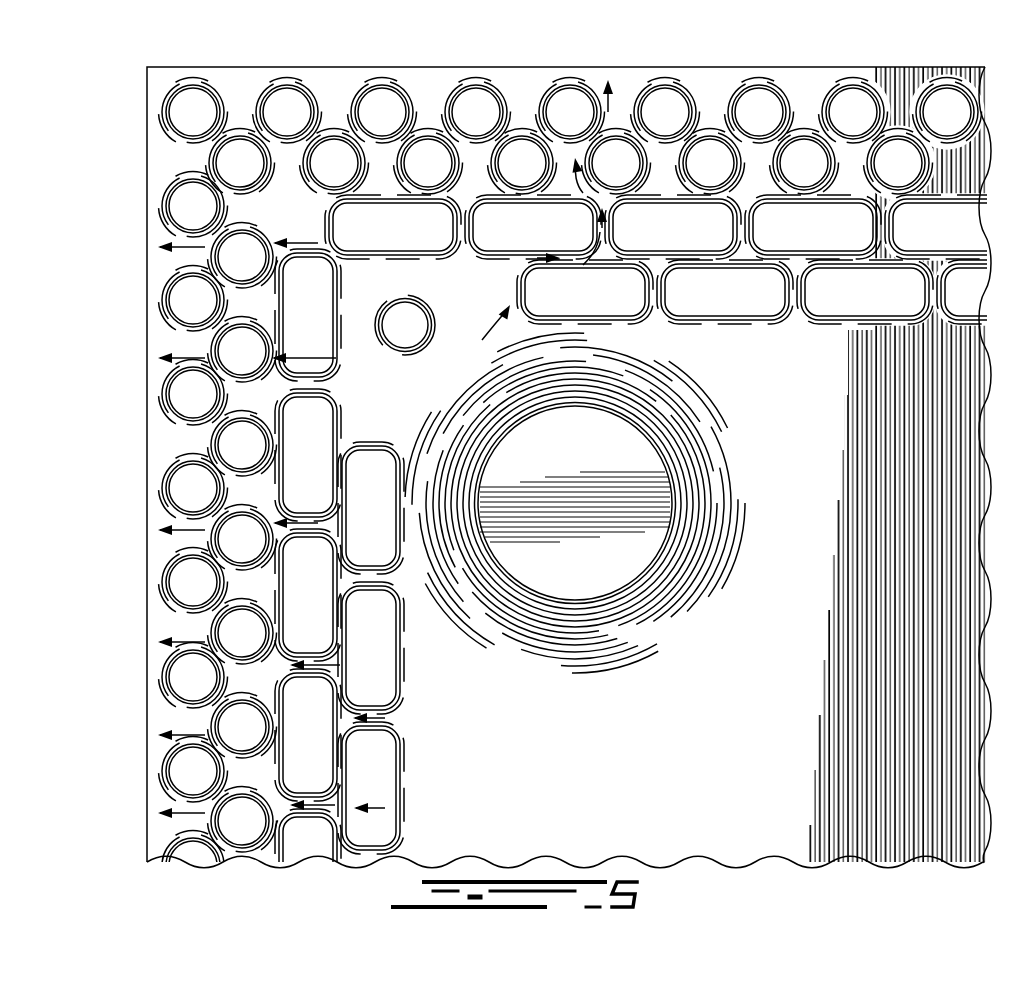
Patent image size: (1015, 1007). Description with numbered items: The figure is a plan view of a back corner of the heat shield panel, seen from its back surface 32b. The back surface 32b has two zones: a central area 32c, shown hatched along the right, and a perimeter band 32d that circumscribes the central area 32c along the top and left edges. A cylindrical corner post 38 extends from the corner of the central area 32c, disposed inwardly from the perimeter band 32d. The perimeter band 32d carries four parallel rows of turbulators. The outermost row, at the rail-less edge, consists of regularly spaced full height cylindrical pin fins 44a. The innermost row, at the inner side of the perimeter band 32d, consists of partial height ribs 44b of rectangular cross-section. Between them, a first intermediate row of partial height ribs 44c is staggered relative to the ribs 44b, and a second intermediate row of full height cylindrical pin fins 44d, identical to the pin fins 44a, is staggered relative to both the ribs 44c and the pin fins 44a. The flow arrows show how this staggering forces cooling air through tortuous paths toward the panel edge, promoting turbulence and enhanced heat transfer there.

The back surface 32b is at (792, 702).
The central area 32c is at (905, 448).
The perimeter band 32d is at (712, 108).
The post 38 is at (603, 545).
The full height pin fins 44a is at (190, 113).
The partial height ribs 44b is at (850, 295).
The partial height ribs 44c is at (500, 233).
The full height cylindrical pin fins 44d is at (233, 540).